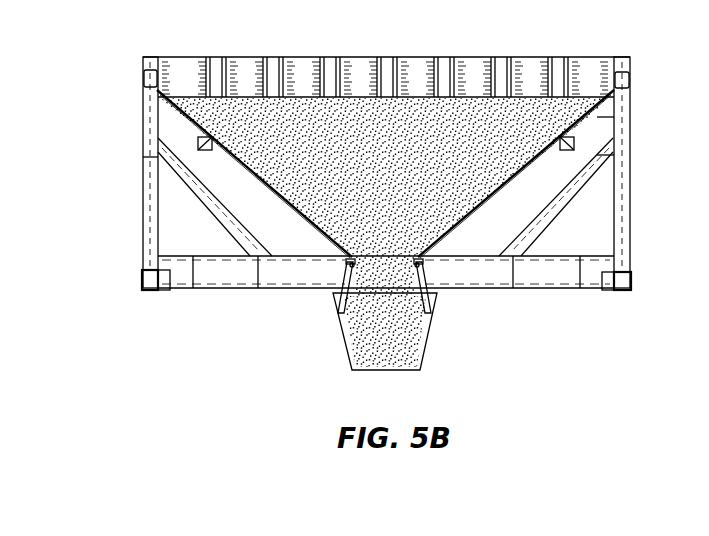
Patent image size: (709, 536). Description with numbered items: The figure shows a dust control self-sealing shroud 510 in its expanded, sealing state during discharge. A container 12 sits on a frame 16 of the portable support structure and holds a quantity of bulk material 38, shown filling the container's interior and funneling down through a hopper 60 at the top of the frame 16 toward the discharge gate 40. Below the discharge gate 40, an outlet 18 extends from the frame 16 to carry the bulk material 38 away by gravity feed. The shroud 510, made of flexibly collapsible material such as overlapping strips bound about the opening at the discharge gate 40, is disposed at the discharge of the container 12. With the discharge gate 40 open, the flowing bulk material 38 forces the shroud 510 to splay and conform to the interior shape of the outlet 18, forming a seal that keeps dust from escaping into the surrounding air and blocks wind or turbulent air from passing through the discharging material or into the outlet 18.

The container 12 is at (588, 72).
The frame 16 is at (622, 223).
The outlet 18 is at (363, 340).
The bulk material 38 is at (290, 178).
The discharge gate 40 is at (427, 266).
The hopper 60 is at (588, 120).
The dust control self-sealing shroud 510 is at (430, 303).